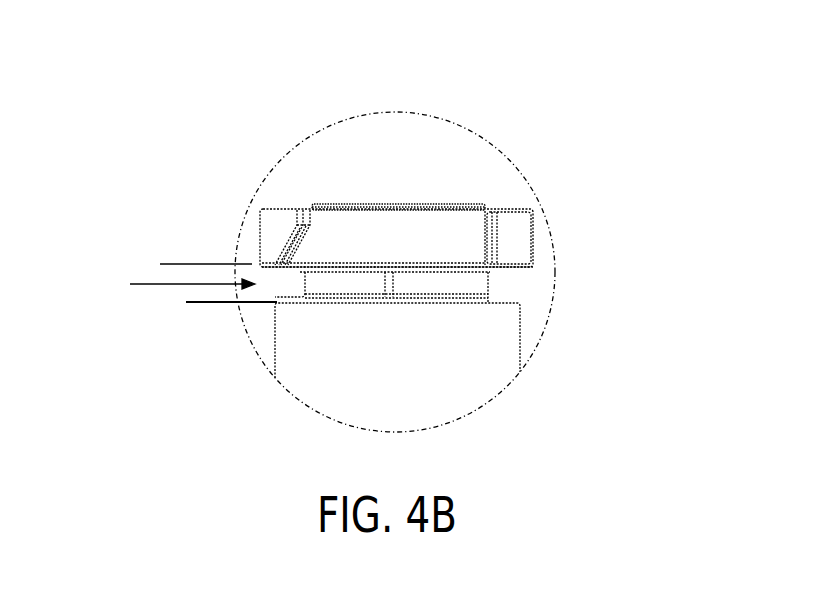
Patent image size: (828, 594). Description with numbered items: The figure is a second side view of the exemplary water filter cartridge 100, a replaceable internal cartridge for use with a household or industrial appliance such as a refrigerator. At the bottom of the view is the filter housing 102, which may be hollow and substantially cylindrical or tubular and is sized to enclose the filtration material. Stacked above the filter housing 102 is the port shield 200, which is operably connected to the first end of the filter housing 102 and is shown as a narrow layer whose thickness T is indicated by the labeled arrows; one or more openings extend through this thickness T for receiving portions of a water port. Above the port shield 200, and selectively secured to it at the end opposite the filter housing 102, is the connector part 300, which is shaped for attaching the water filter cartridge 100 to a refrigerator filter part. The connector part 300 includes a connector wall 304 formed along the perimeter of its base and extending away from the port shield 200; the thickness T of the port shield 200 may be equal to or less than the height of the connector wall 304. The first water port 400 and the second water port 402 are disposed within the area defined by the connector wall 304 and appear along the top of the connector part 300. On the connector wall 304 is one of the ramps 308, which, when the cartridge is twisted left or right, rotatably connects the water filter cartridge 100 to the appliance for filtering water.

The water filter cartridge 100 is at (152, 161).
The filter housing 102 is at (410, 382).
The port shield 200 is at (353, 282).
The connector part 300 is at (493, 240).
The connector wall 304 is at (410, 250).
The ramps 308 is at (270, 231).
The first water port 400 is at (442, 205).
The second water port 402 is at (337, 207).
The thickness T is at (184, 281).